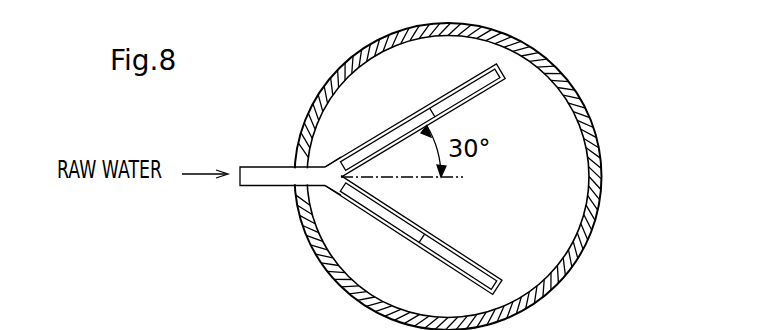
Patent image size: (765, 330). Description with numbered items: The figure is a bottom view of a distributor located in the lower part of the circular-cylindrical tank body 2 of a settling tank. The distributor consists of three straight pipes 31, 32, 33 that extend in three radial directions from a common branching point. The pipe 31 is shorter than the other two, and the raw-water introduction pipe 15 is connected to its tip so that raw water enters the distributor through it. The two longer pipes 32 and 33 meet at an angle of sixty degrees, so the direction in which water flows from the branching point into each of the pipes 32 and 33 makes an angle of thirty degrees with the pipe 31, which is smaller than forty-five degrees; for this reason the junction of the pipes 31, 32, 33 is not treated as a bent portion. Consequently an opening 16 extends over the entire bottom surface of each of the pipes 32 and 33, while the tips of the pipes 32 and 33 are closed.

The tank body 2 is at (590, 106).
The raw-water introduction pipe 15 is at (258, 186).
The opening 16 is at (432, 103).
The pipe 31 is at (314, 163).
The pipe 32 is at (470, 101).
The pipe 33 is at (462, 246).